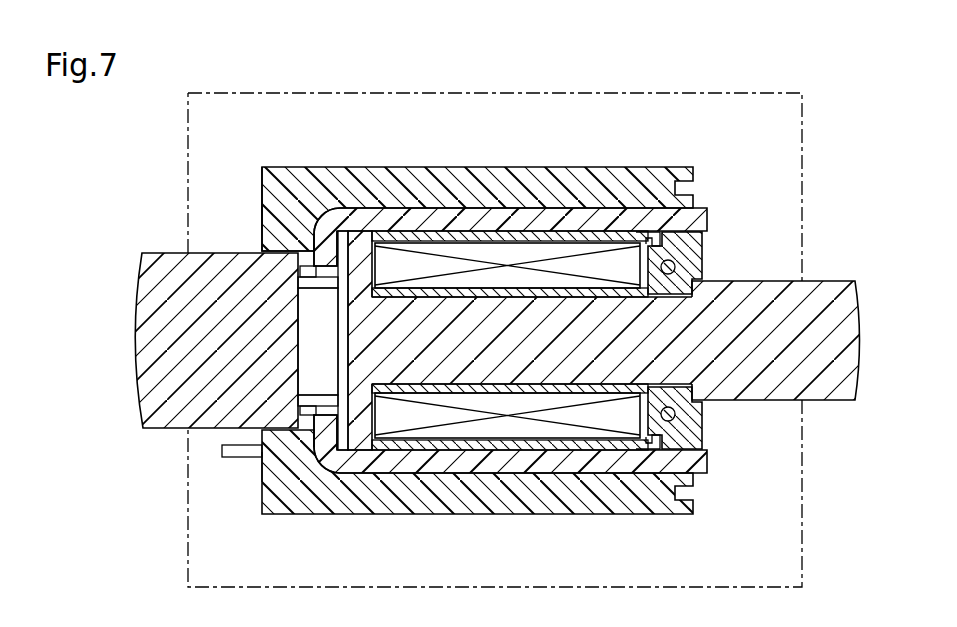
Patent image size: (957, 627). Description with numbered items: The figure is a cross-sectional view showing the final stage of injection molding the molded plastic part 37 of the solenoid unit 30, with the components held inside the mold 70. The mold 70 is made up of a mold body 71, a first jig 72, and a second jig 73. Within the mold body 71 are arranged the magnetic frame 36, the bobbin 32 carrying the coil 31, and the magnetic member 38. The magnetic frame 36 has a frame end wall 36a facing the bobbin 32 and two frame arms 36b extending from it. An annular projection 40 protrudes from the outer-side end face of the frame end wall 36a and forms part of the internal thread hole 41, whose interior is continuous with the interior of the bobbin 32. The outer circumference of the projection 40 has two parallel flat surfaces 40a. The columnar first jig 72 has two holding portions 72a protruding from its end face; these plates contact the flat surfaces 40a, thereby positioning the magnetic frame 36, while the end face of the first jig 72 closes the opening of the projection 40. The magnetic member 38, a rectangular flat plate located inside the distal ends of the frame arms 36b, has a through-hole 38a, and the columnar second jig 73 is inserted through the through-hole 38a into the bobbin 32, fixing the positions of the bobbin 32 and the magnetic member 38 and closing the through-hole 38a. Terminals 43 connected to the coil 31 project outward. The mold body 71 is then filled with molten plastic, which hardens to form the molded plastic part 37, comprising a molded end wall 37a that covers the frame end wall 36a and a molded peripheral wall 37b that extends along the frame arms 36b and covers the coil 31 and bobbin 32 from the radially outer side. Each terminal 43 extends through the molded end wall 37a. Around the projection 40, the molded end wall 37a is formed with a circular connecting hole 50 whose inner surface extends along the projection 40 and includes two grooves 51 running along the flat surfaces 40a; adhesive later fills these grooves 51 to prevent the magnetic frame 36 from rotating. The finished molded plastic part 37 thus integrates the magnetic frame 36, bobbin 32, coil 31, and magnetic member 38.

The solenoid unit 30 is at (250, 133).
The coil 31 is at (511, 258).
The bobbin 32 is at (568, 300).
The magnetic frame 36 is at (318, 208).
The frame end wall 36a is at (306, 456).
The frame arms 36b is at (458, 218).
The molded plastic part 37 is at (660, 514).
The molded end wall 37a is at (268, 182).
The molded peripheral wall 37b is at (570, 505).
The magnetic member 38 is at (702, 243).
The through-hole 38a is at (690, 382).
The projection 40 is at (298, 277).
The flat surfaces 40a is at (310, 266).
The internal thread hole 41 is at (321, 290).
The terminal 43 is at (246, 458).
The connecting hole 50 is at (298, 410).
The grooves 51 is at (298, 252).
The mold 70 is at (813, 102).
The mold body 71 is at (188, 120).
The first jig 72 is at (168, 397).
The holding portions 72a is at (358, 262).
The second jig 73 is at (818, 395).